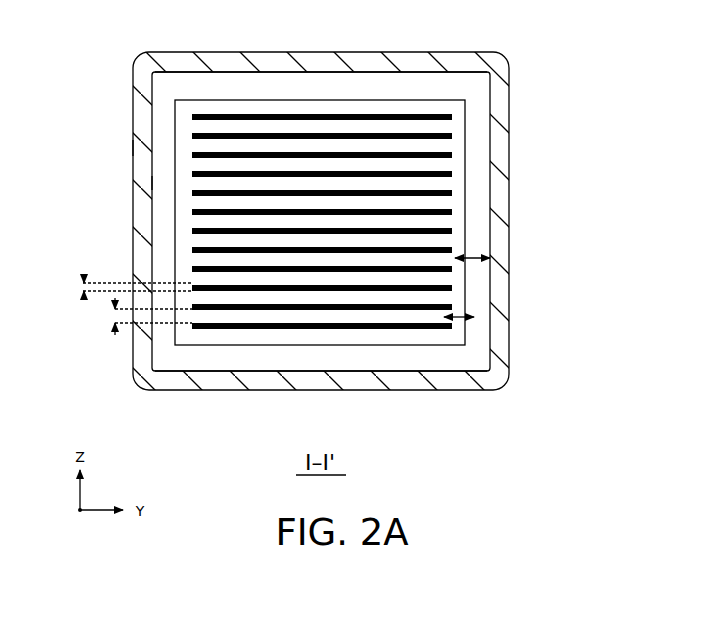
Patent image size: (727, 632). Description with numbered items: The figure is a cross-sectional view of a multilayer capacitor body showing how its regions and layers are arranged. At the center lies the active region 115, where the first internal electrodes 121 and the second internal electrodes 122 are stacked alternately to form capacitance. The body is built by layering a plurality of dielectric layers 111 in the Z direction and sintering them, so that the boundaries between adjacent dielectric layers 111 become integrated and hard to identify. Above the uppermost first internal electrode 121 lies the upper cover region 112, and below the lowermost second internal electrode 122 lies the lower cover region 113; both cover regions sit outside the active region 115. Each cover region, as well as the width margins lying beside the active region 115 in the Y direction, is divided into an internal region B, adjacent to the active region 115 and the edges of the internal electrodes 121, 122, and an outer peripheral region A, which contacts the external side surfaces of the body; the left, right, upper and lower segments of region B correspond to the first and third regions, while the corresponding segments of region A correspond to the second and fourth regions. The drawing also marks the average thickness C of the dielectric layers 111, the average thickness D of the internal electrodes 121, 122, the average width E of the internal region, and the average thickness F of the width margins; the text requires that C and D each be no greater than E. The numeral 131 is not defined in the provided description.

The case 131 is at (387, 52).
The upper cover region 112 is at (305, 88).
The lower cover region 113 is at (312, 360).
The active region 115 is at (475, 213).
The dielectric layer 111 is at (462, 128).
The first internal electrode 121 is at (466, 113).
The second internal electrode 122 is at (462, 137).
The outer/peripheral region A is at (137, 148).
The internal region B is at (150, 183).
The average thickness of dielectric layer C is at (142, 316).
The average thickness of internal electrode D is at (126, 287).
The average width of first or third region E is at (476, 317).
The average thickness of width margin F is at (492, 258).